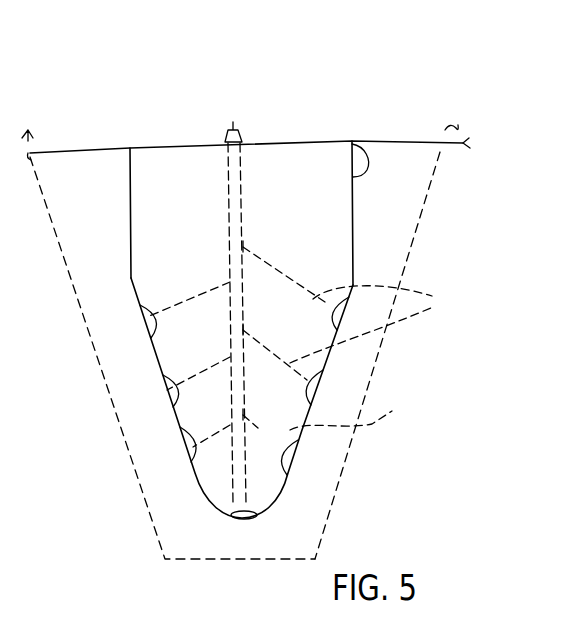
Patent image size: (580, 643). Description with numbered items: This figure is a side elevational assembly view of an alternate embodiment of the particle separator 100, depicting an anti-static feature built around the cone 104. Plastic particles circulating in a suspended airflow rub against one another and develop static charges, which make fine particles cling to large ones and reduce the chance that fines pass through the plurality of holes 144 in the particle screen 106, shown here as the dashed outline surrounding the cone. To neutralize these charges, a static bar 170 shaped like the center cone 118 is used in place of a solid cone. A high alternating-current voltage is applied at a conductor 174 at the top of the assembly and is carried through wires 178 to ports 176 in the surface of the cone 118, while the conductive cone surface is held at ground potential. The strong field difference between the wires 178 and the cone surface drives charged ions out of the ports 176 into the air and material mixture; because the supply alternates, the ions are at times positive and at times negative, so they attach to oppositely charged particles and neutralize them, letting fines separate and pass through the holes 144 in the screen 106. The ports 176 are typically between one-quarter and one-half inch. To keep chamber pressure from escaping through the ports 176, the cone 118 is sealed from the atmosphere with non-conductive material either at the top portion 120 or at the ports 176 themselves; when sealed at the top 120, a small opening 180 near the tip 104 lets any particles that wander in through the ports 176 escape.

The assembly 100 is at (463, 143).
The cone 104 is at (200, 475).
The particle screen 106 is at (436, 173).
The center cone 118 is at (365, 147).
The top portion 120 is at (150, 130).
The plurality of holes 144 is at (378, 369).
The static bar 170 is at (244, 191).
The conductor 174 is at (233, 106).
The ports 176 is at (136, 398).
The wires 178 is at (377, 375).
The small opening 180 is at (253, 515).